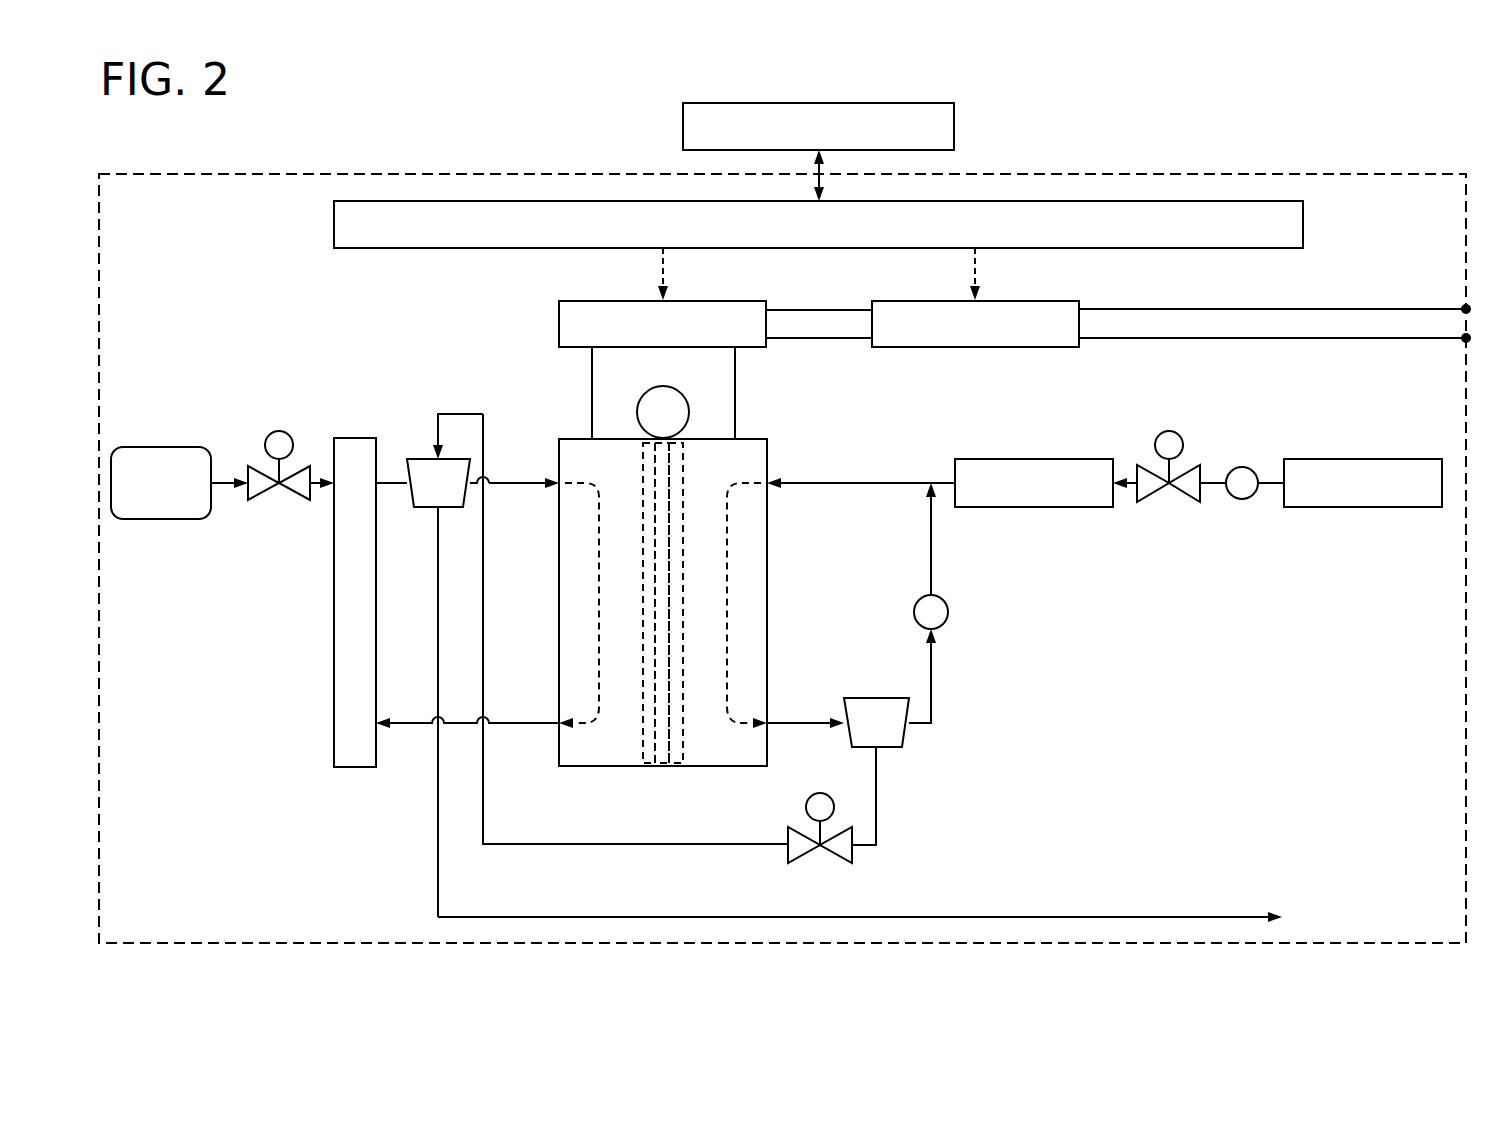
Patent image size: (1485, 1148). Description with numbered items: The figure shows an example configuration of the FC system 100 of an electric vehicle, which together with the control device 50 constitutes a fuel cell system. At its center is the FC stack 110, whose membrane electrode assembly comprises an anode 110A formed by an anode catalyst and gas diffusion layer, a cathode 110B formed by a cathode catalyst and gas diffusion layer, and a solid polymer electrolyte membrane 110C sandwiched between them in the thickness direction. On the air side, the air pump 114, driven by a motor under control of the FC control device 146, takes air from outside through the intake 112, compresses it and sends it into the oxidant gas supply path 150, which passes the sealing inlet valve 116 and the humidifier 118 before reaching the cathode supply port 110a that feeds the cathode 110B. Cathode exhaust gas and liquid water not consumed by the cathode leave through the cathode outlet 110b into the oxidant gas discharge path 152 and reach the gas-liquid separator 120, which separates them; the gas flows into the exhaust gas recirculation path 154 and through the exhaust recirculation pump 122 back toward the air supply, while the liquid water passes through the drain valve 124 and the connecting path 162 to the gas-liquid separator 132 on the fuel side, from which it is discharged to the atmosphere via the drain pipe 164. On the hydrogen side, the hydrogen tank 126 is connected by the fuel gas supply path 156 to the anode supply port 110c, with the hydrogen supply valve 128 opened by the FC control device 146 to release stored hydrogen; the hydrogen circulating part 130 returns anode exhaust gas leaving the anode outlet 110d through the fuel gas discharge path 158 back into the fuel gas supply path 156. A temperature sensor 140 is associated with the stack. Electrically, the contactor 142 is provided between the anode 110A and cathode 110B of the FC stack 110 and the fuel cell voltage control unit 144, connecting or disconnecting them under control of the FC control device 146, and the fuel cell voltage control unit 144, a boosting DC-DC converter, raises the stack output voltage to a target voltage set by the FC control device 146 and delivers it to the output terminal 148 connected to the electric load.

The control device 50 is at (955, 126).
The FC system 100 is at (1392, 174).
The FC stack 110 is at (768, 603).
The cathode supply port 110a is at (768, 482).
The cathode outlet port 110b is at (768, 722).
The anode supply port 110c is at (558, 482).
The anode outlet port 110d is at (558, 722).
The anode 110A is at (647, 766).
The cathode 110B is at (677, 766).
The solid polymer electrolyte membrane 110C is at (662, 766).
The intake 112 is at (1380, 458).
The air pump 114 is at (1243, 466).
The sealing inlet valve 116 is at (1180, 502).
The humidifier 118 is at (1050, 458).
The gas-liquid separator 120 is at (876, 697).
The exhaust recirculation pump 122 is at (949, 612).
The drain valve 124 is at (825, 862).
The hydrogen tank 126 is at (150, 446).
The hydrogen supply valve 128 is at (288, 498).
The hydrogen circulating part 130 is at (356, 438).
The gas-liquid separator 132 is at (430, 510).
The temperature sensor 140 is at (681, 388).
The contactor 142 is at (704, 300).
The fuel cell voltage control unit 144 is at (1016, 300).
The FC control device 146 is at (1304, 225).
The output terminal 148 is at (1462, 307).
The oxidant gas supply path 150 is at (1214, 487).
The oxidant gas discharge path 152 is at (800, 725).
The exhaust gas recirculation path 154 is at (933, 682).
The fuel gas supply path 156 is at (228, 486).
The fuel gas discharge path 158 is at (405, 725).
The connecting path 162 is at (484, 785).
The drain pipe 164 is at (520, 915).